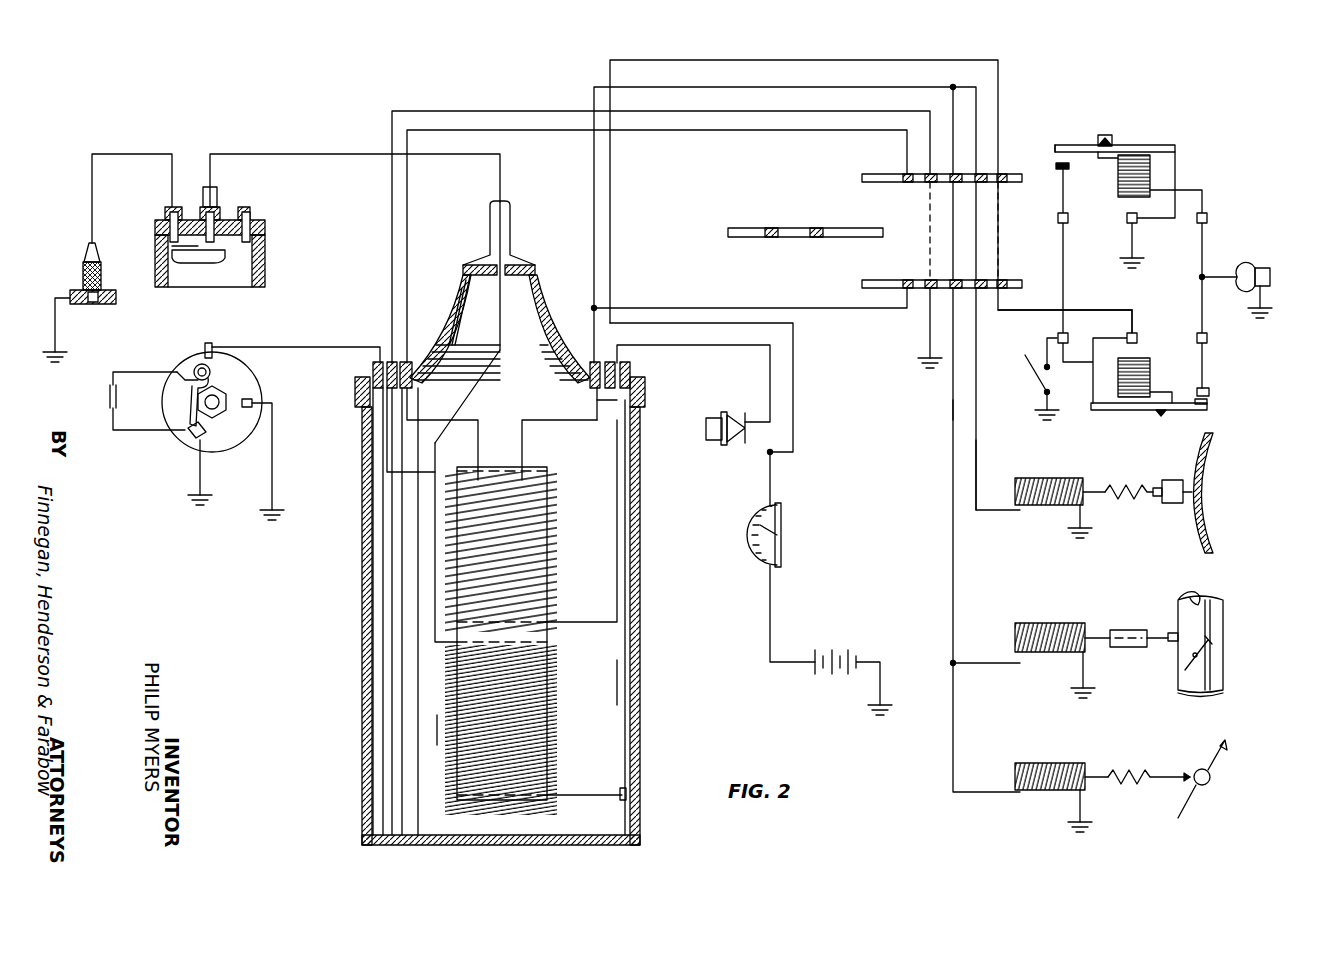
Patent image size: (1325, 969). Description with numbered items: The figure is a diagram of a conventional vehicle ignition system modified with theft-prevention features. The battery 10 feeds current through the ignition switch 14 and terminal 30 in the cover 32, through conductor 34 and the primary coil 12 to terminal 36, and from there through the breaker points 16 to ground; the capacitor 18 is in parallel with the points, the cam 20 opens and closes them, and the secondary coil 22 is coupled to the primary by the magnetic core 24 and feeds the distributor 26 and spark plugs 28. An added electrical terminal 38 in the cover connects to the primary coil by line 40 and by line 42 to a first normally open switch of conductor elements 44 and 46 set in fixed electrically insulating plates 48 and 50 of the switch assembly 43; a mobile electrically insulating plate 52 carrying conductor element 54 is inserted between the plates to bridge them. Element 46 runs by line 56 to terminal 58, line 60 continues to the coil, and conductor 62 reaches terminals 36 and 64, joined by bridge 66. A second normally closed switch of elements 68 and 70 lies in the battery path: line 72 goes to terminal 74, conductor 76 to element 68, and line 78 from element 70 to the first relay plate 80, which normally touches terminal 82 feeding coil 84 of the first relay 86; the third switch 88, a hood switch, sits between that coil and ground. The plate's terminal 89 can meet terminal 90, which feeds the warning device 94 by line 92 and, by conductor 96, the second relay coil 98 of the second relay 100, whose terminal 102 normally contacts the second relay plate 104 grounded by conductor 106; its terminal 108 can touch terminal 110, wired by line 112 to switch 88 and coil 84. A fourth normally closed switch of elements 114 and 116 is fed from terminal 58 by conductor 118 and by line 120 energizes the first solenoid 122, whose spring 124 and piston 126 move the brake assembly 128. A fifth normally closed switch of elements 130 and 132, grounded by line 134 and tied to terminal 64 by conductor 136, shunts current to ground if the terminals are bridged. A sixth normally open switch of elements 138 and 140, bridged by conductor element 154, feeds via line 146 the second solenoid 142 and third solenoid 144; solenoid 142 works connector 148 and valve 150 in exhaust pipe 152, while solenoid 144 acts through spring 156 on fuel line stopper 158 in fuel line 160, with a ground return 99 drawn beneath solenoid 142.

The battery 10 is at (830, 655).
The primary coil 12 is at (557, 552).
The ignition switch 14 is at (748, 430).
The breaker points 16 is at (190, 436).
The capacitor 18 is at (104, 396).
The cam 20 is at (210, 431).
The secondary coil 22 is at (560, 738).
The magnetic core 24 is at (552, 638).
The distributor 26 is at (266, 238).
The spark plugs 28 is at (72, 275).
The terminal 30 is at (640, 385).
The cover 32 is at (545, 282).
The conductor 34 is at (617, 498).
The terminal 36 is at (372, 372).
The electrical terminal 38 is at (425, 365).
The line 40 is at (415, 425).
The line 42 is at (560, 132).
The switch assembly 43 is at (803, 160).
The conductor element 44 is at (905, 172).
The conductor element 46 is at (905, 279).
The fixed electrically insulating plate 48 is at (862, 178).
The fixed electrically insulating plate 50 is at (862, 283).
The mobile electrically insulating plate 52 is at (728, 234).
The conductor element 54 is at (770, 240).
The line 56 is at (630, 308).
The terminal 58 is at (600, 390).
The line 60 is at (516, 418).
The conductor 62 is at (375, 450).
The terminal 64 is at (395, 362).
The bridge 66 is at (383, 400).
The conductor element 68 is at (1002, 184).
The conductor element 70 is at (1000, 278).
The line 72 is at (793, 375).
The terminal 74 is at (596, 362).
The conductor 76 is at (610, 72).
The line 78 is at (1010, 310).
The first relay plate 80 is at (1120, 412).
The terminal 82 is at (1170, 418).
The coil 84 is at (1150, 372).
The first relay 86 is at (1147, 397).
The third switch 88 is at (1030, 375).
The terminal 89 is at (1208, 402).
The terminal 90 is at (1210, 383).
The line 92 is at (1217, 277).
The warning device 94 is at (1265, 268).
The conductor 96 is at (1205, 240).
The second relay coil 98 is at (1115, 180).
The ground 99 is at (1095, 695).
The second relay 100 is at (1178, 244).
The terminal 102 is at (1108, 135).
The second relay plate 104 is at (1138, 145).
The conductor 106 is at (1162, 218).
The terminal 108 is at (1050, 148).
The terminal 110 is at (1054, 166).
The line 112 is at (1066, 250).
The conductor element 114 is at (980, 172).
The conductor element 116 is at (978, 290).
The conductor 118 is at (668, 88).
The line 120 is at (980, 430).
The first solenoid 122 is at (1030, 478).
The spring 124 is at (1115, 485).
The piston 126 is at (1160, 503).
The brake assembly 128 is at (1213, 460).
The conductor element 130 is at (928, 186).
The conductor element 132 is at (928, 292).
The line 134 is at (926, 345).
The conductor 136 is at (545, 110).
The conductor element 138 is at (953, 185).
The conductor element 140 is at (953, 278).
The second solenoid 142 is at (1035, 623).
The third solenoid 144 is at (1040, 763).
The line 146 is at (953, 406).
The connector 148 is at (1122, 630).
The valve 150 is at (1222, 648).
The exhaust pipe 152 is at (1224, 615).
The conductor element 154 is at (817, 240).
The spring 156 is at (1112, 775).
The fuel line stopper 158 is at (1195, 770).
The fuel line 160 is at (1195, 812).